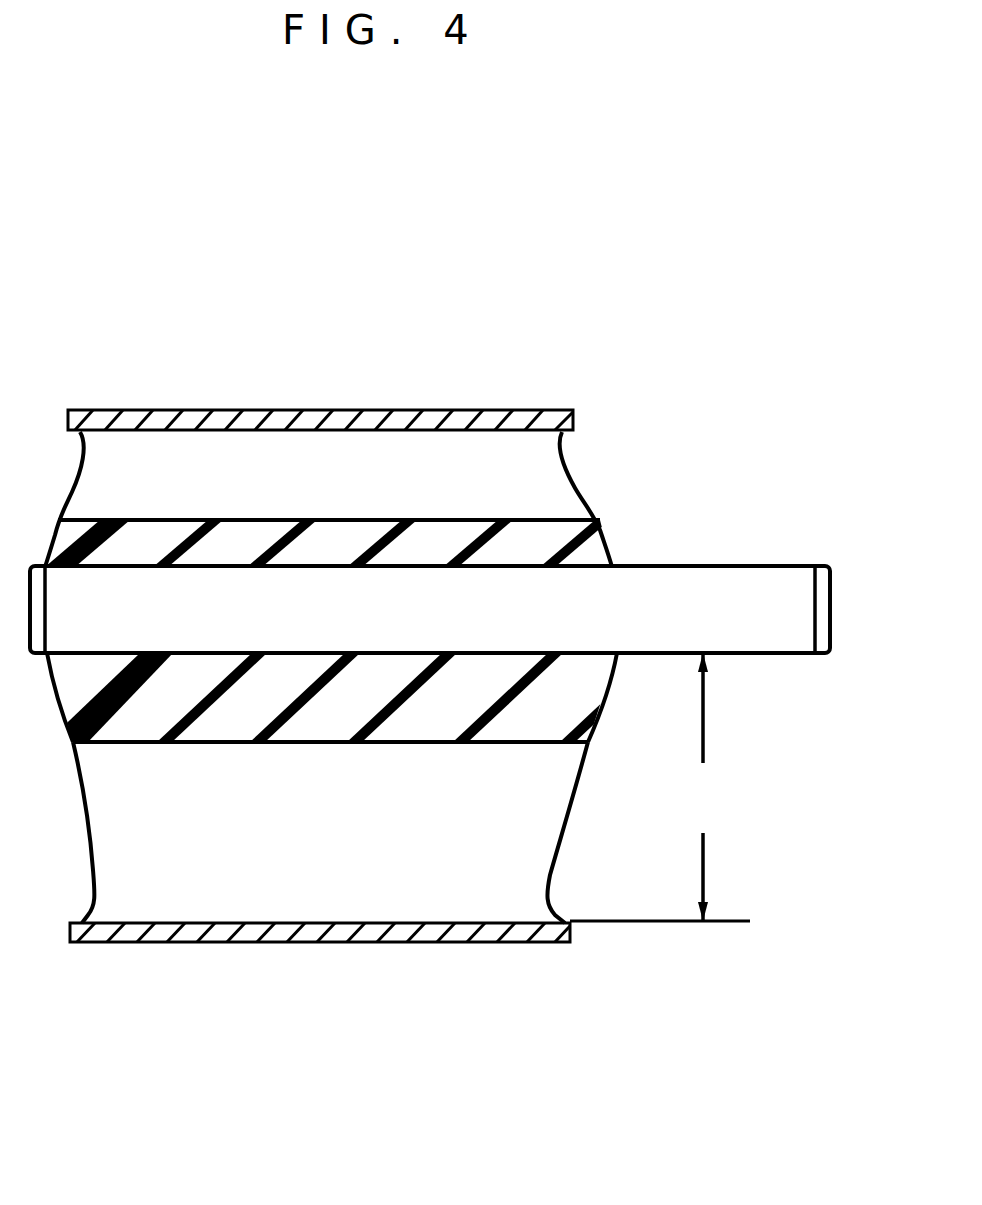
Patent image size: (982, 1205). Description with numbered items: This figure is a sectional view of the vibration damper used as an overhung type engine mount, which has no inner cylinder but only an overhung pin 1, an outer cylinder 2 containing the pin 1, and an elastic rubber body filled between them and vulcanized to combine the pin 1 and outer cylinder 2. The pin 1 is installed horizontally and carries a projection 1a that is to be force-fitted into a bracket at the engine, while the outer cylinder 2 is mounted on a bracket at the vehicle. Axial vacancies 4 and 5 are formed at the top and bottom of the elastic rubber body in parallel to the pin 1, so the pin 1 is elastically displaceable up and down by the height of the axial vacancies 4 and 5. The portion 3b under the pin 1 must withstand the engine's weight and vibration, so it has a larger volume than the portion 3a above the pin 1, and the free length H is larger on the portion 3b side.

The overhung pin 1 is at (547, 587).
The projection 1a is at (786, 588).
The outer cylinder 2 is at (378, 412).
The portion of the elastic rubber body above the pin 3a is at (530, 535).
The portion of the elastic rubber body under the pin 3b is at (425, 717).
The axial vacancy 4 is at (450, 463).
The axial vacancy 5 is at (333, 887).
The free length H is at (660, 787).